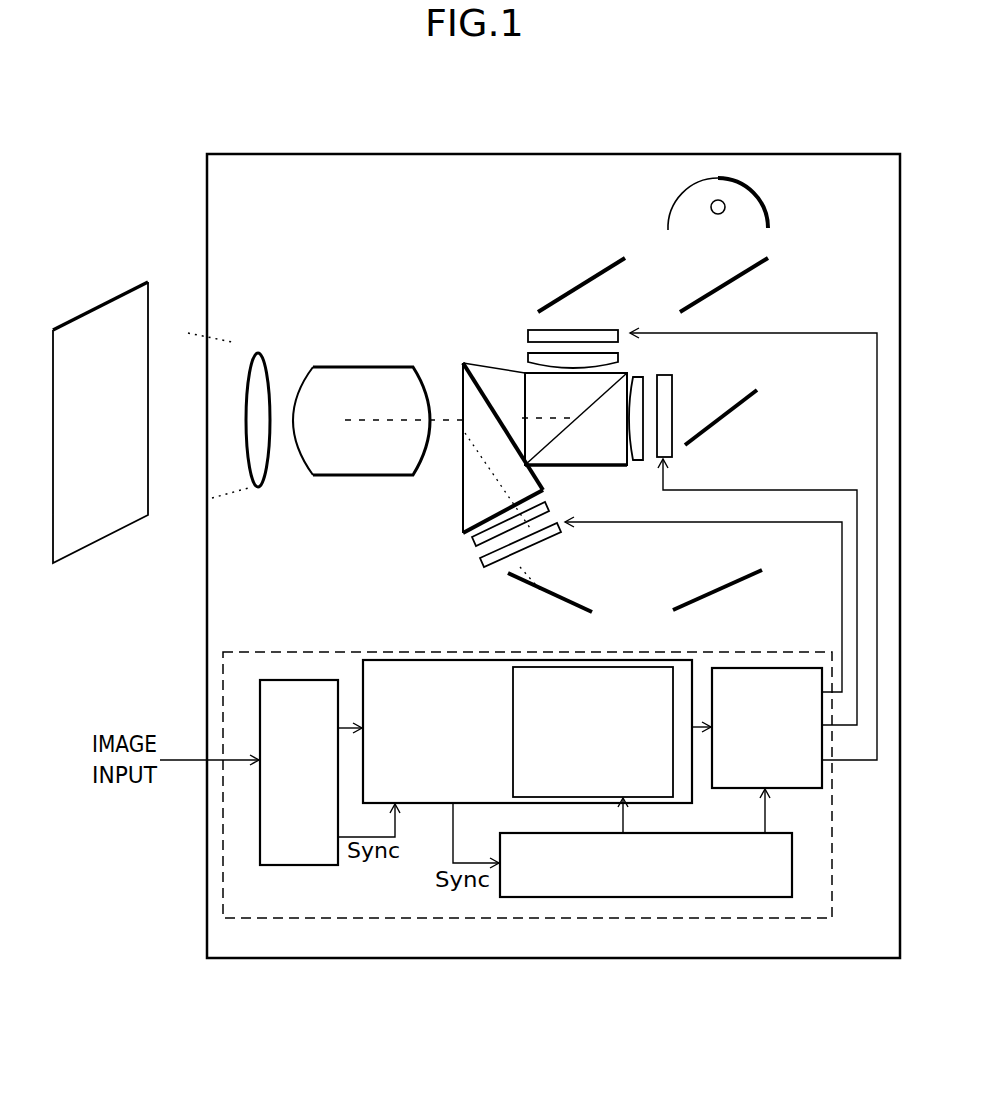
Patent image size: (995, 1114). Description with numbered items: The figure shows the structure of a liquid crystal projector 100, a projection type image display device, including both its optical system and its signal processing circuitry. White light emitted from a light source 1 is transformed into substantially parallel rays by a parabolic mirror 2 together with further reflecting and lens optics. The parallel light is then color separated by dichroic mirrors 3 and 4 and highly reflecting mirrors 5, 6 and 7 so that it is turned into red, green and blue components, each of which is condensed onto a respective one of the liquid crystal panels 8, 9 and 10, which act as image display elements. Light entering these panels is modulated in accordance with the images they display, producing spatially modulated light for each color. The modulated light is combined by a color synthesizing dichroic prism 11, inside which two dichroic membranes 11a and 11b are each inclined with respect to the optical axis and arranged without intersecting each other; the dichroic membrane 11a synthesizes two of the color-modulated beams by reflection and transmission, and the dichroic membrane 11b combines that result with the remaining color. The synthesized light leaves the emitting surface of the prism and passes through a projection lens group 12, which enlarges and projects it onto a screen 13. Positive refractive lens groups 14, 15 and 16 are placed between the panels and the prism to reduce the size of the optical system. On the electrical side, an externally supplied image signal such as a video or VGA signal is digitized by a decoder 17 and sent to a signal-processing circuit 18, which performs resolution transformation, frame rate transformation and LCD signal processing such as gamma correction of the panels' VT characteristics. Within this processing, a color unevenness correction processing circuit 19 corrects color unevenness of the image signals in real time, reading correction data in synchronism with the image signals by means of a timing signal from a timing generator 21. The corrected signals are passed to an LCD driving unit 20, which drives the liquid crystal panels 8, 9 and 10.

The liquid crystal projector 100 is at (396, 158).
The light source 1 is at (712, 204).
The parabolic mirror 2 is at (767, 198).
The dichroic mirror 3 is at (763, 263).
The dichroic mirror 4 is at (757, 391).
The highly reflecting mirror 5 is at (757, 577).
The highly reflecting mirror 6 is at (576, 605).
The highly reflecting mirror 7 is at (590, 275).
The liquid crystal panel 8 is at (528, 336).
The liquid crystal panel 9 is at (670, 395).
The liquid crystal panel 10 is at (478, 565).
The color synthesizing dichroic prism 11 is at (460, 382).
The dichroic membrane 11a is at (562, 432).
The dichroic membrane 11b is at (480, 362).
The projection lens group 12 is at (332, 373).
The screen 13 is at (95, 307).
The positive refractive lens group 14 is at (527, 360).
The positive refractive lens group 15 is at (633, 447).
The positive refractive lens group 16 is at (470, 547).
The decoder 17 is at (295, 684).
The signal-processing circuit 18 is at (400, 670).
The color unevenness correction processing circuit 19 is at (623, 690).
The LCD driving unit 20 is at (760, 668).
The timing generator 21 is at (795, 870).